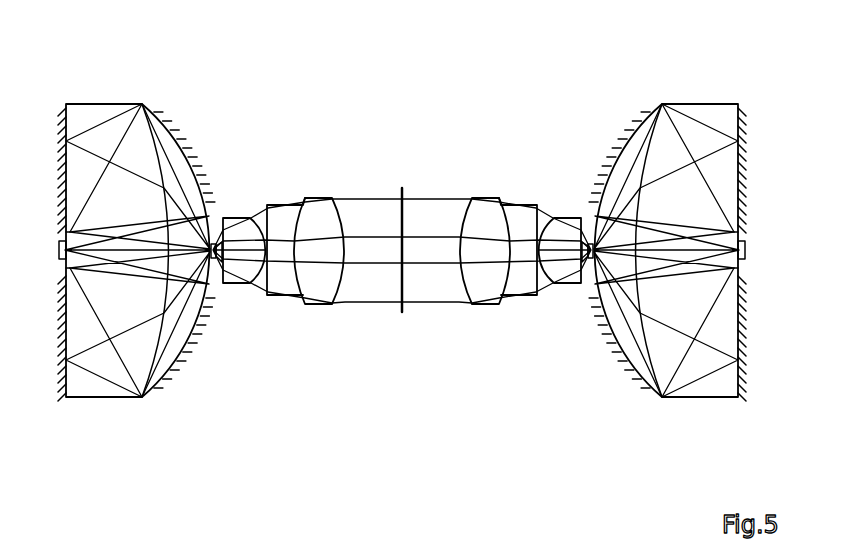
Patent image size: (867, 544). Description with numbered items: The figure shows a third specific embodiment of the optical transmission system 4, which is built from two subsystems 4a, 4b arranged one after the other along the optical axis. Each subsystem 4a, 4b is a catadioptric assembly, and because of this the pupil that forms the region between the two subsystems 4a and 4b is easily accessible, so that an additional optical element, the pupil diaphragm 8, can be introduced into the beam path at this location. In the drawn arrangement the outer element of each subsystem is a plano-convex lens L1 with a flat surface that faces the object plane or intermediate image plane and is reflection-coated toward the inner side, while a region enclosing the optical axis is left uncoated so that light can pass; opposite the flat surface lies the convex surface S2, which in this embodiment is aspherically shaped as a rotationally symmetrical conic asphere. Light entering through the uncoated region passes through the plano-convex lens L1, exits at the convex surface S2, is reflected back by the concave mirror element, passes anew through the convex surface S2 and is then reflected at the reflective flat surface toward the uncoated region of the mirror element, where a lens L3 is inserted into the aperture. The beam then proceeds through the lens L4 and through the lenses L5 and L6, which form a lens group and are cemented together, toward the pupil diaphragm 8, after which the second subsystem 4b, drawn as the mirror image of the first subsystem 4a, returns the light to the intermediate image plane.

The first lens (Mangin-type mirror lens) L1 is at (84, 108).
The reflective surface of first lens S2 is at (160, 113).
The third lens L3 is at (217, 259).
The fourth lens L4 is at (235, 217).
The lens L5 is at (283, 205).
The lens L6 is at (318, 196).
The pupil diaphragm 8 is at (410, 200).
The transmission system 4 is at (575, 265).
The subsystem 4a is at (228, 265).
The subsystem 4b is at (749, 430).